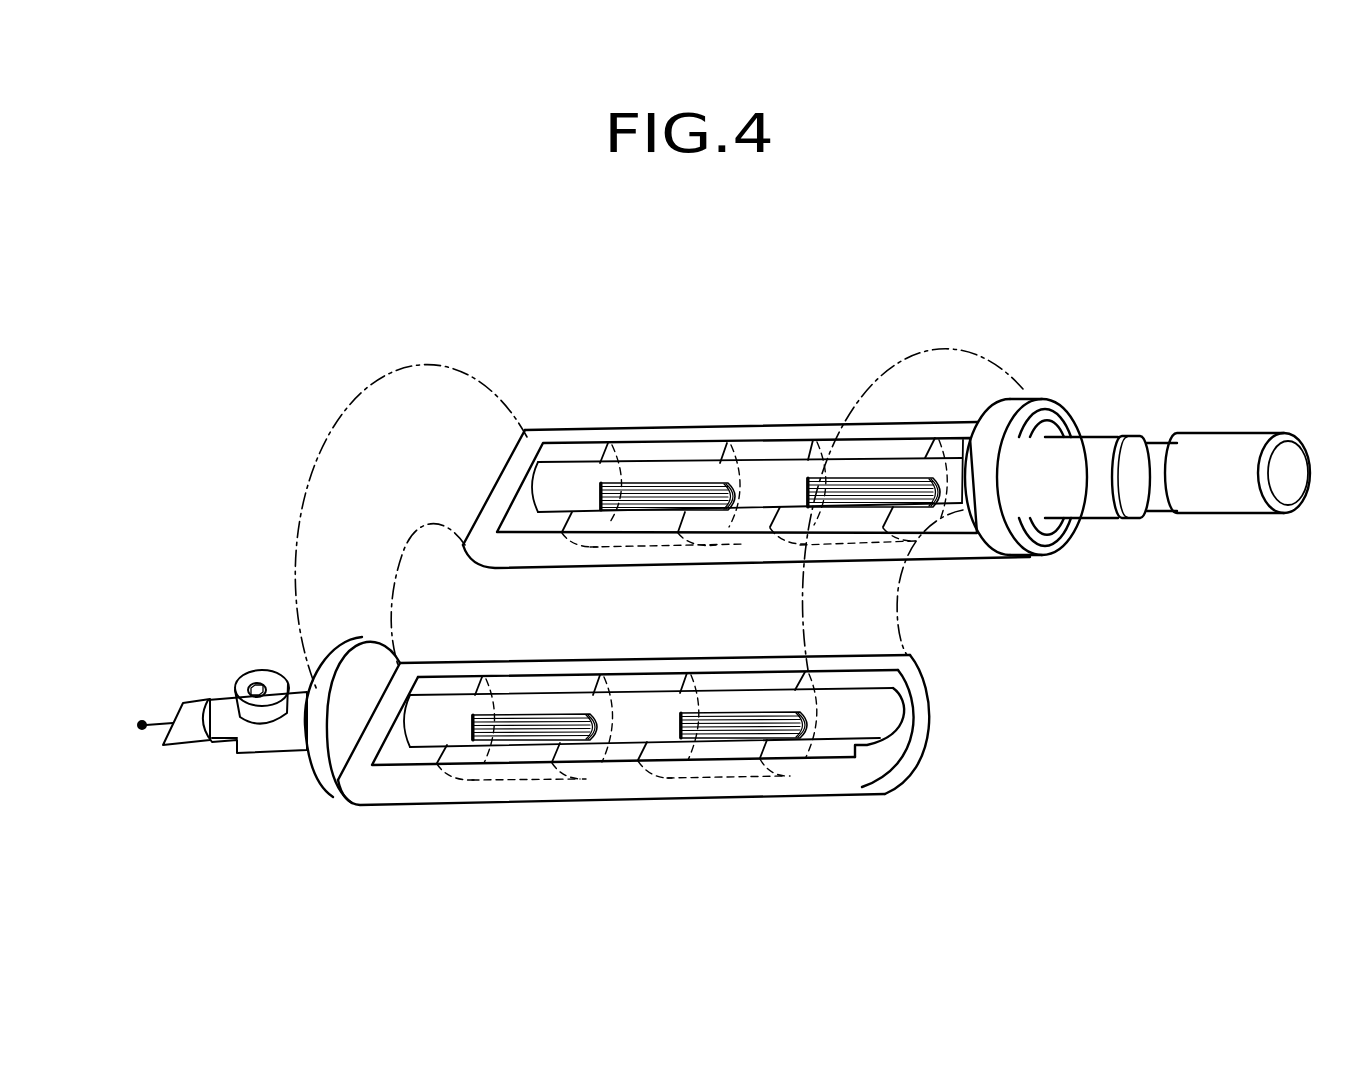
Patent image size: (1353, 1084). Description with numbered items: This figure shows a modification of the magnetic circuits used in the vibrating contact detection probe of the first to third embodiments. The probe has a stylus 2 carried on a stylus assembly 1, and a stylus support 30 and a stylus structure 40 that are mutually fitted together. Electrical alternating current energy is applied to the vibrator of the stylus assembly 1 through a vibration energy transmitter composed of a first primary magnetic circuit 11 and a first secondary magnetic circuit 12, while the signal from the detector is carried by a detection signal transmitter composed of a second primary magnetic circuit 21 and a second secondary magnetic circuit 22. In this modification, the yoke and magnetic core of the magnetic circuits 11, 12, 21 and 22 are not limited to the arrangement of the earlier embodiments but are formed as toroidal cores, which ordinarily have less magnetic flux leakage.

The stylus assembly 1 is at (182, 789).
The stylus 2 is at (141, 719).
The first primary magnetic circuit 11 is at (928, 411).
The first secondary magnetic circuit 12 is at (783, 812).
The second primary magnetic circuit 21 is at (580, 815).
The second secondary magnetic circuit 22 is at (728, 414).
The stylus support 30 is at (1043, 397).
The stylus structure 40 is at (907, 775).